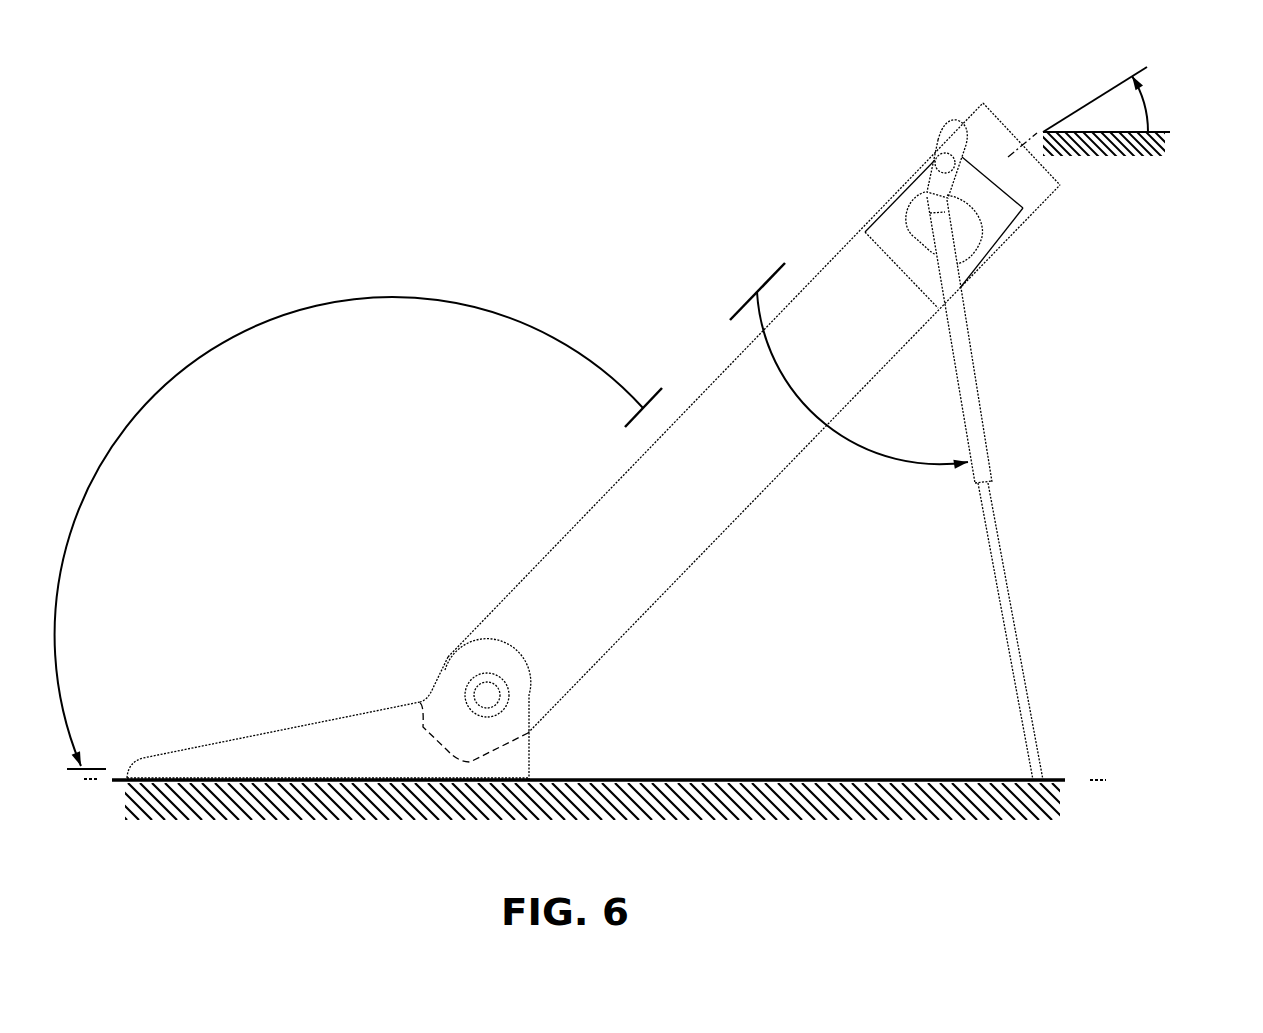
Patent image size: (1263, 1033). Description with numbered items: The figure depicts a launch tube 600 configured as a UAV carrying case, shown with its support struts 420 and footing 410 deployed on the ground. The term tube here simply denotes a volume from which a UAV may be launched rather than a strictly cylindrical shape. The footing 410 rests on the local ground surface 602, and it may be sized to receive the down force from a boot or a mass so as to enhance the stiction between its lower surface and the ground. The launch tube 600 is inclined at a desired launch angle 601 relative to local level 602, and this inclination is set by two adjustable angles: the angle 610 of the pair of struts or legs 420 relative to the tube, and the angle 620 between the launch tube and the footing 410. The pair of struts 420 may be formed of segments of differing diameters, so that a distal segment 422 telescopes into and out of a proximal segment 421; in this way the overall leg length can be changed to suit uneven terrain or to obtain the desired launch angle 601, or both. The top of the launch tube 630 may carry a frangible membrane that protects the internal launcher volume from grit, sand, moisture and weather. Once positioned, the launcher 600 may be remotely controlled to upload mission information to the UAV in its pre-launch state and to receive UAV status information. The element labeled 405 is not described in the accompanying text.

The launch tube 600 is at (613, 160).
The arm 405 is at (540, 578).
The footing 410 is at (300, 750).
The support struts 420 is at (1002, 450).
The proximal segment 421 is at (983, 432).
The distal segment 422 is at (1006, 580).
The launch angle 601 is at (1150, 105).
The local level 602 is at (870, 778).
The angle of the pair of struts 610 is at (867, 453).
The angle between the launch tube and the footing 620 is at (371, 293).
The top of the launch tube 630 is at (1030, 110).